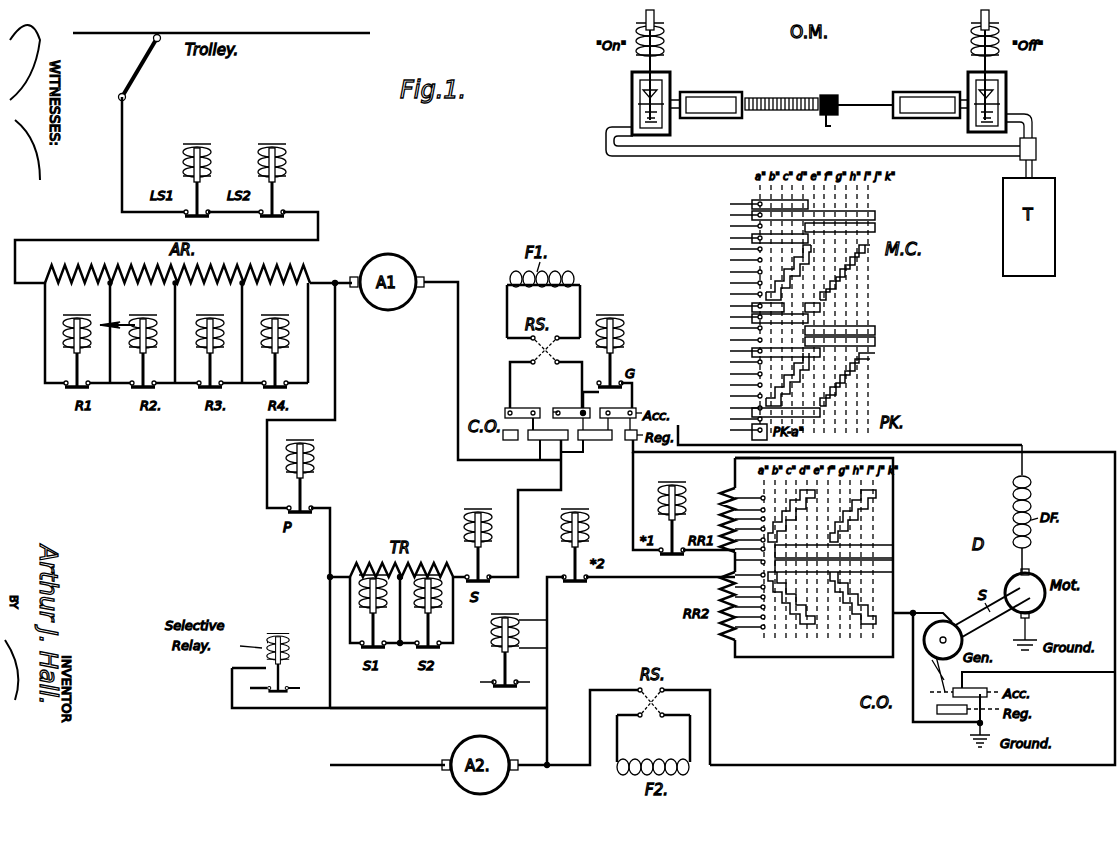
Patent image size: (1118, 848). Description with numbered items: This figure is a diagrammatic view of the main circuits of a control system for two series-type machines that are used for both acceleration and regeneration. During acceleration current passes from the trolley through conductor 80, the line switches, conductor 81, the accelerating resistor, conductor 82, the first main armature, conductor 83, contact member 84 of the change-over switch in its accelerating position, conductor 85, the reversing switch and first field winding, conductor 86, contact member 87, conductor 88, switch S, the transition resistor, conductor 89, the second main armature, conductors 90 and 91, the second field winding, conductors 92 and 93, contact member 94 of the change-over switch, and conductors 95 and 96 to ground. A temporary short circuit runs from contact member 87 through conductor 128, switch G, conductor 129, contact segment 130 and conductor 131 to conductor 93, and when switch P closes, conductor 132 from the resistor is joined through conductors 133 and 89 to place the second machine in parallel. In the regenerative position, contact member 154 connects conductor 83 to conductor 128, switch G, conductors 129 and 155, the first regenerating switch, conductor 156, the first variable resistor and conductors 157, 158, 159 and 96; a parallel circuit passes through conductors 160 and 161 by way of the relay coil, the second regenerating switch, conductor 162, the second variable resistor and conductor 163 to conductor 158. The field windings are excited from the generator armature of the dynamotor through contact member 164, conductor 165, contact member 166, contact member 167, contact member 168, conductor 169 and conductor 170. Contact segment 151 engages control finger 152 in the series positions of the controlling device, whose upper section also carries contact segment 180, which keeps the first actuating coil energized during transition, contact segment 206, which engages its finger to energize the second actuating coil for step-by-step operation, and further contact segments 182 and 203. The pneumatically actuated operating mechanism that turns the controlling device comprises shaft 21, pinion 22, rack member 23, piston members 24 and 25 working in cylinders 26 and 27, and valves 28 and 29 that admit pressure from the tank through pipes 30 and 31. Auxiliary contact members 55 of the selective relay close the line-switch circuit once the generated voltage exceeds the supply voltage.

The shaft 21 is at (832, 124).
The pinion 22 is at (828, 95).
The rack member 23 is at (792, 98).
The piston member 24 is at (696, 92).
The piston member 25 is at (903, 92).
The cylinder 26 is at (732, 92).
The cylinder 27 is at (938, 92).
The valve 28 is at (632, 103).
The valve 29 is at (1006, 103).
The pipe 30 is at (969, 153).
The pipe 31 is at (1030, 134).
The auxiliary contact members of the selective relay 55 is at (292, 690).
The conductor 80 is at (122, 162).
The conductor 81 is at (318, 238).
The conductor 82 is at (345, 283).
The conductor 83 is at (458, 315).
The contact member of the change-over switch 84 is at (522, 408).
The conductor 85 is at (510, 376).
The conductor 86 is at (583, 376).
The contact member of the change-over switch 87 is at (580, 406).
The conductor 88 is at (563, 486).
The conductor 89 is at (330, 602).
The conductor 90 is at (536, 768).
The conductor 91 is at (577, 768).
The conductor 92 is at (712, 722).
The conductor 93 is at (1102, 673).
The contact member of the change-over switch 94 is at (975, 690).
The conductor 95 is at (981, 714).
The conductor 96 is at (972, 736).
The conductor 128 is at (556, 407).
The conductor 129 is at (632, 390).
The contact segment of the change-over switch 130 is at (596, 405).
The conductor 131 is at (1115, 478).
The conductor 132 is at (335, 343).
The conductor 133 is at (330, 540).
The contact segment 151 is at (830, 524).
The control finger 152 is at (814, 590).
The contact member of the change-over switch 154 is at (552, 441).
The conductor 155 is at (634, 470).
The conductor 156 is at (709, 562).
The conductor 157 is at (735, 460).
The conductor 158 is at (907, 612).
The conductor 159 is at (913, 676).
The conductor 160 is at (548, 722).
The conductor 161 is at (547, 604).
The conductor 162 is at (660, 590).
The conductor 163 is at (790, 657).
The contact member of the change-over switch 164 is at (630, 441).
The conductor 165 is at (582, 452).
The contact member of the change-over switch 166 is at (506, 441).
The contact member of the change-over switch 167 is at (595, 428).
The contact member of the change-over switch 168 is at (945, 714).
The conductor 169 is at (944, 692).
The conductor 170 is at (943, 612).
The contact segment 180 is at (782, 391).
The master controller segment 182 is at (770, 290).
The master controller segment 203 is at (840, 391).
The contact segment 206 is at (830, 292).